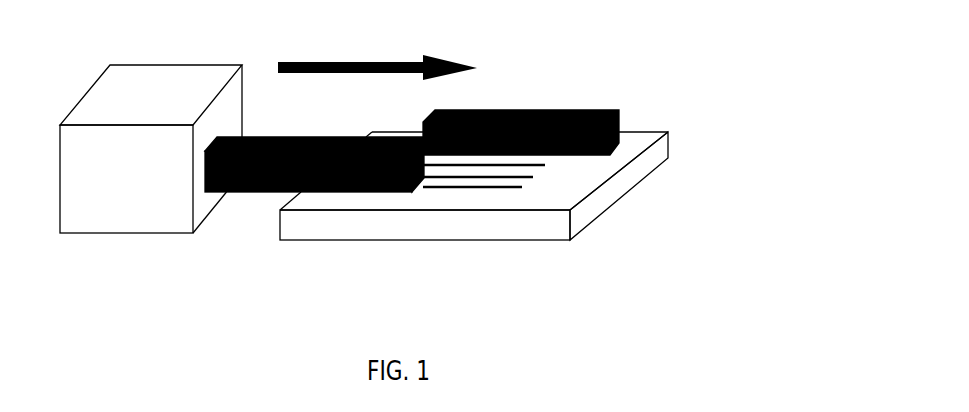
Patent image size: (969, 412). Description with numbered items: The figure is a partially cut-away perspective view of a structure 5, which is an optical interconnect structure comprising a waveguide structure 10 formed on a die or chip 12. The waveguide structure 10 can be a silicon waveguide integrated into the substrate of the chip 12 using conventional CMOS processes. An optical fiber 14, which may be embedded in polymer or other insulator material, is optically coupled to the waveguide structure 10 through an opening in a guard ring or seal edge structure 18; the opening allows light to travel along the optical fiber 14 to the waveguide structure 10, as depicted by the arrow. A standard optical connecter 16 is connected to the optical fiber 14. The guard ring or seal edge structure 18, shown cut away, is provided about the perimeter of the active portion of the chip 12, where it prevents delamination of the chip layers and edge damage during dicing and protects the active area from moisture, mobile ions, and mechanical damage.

The structure 5 is at (420, 153).
The waveguide structure 10 is at (457, 187).
The die (chip) 12 is at (583, 230).
The optical fiber 14 is at (230, 192).
The optical connecter 16 is at (183, 70).
The guard ring or seal edge structure 18 is at (530, 112).